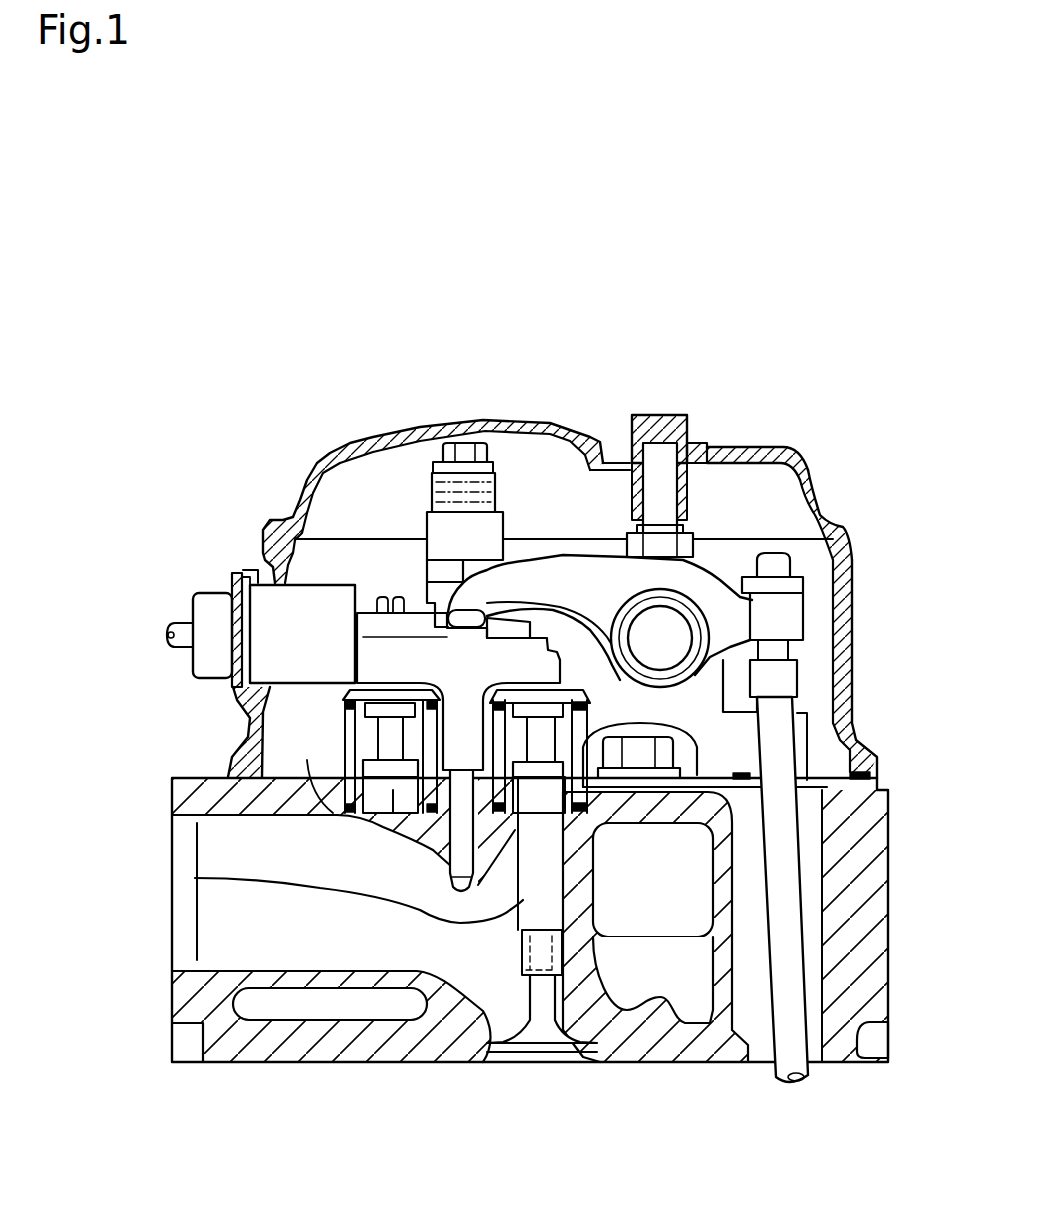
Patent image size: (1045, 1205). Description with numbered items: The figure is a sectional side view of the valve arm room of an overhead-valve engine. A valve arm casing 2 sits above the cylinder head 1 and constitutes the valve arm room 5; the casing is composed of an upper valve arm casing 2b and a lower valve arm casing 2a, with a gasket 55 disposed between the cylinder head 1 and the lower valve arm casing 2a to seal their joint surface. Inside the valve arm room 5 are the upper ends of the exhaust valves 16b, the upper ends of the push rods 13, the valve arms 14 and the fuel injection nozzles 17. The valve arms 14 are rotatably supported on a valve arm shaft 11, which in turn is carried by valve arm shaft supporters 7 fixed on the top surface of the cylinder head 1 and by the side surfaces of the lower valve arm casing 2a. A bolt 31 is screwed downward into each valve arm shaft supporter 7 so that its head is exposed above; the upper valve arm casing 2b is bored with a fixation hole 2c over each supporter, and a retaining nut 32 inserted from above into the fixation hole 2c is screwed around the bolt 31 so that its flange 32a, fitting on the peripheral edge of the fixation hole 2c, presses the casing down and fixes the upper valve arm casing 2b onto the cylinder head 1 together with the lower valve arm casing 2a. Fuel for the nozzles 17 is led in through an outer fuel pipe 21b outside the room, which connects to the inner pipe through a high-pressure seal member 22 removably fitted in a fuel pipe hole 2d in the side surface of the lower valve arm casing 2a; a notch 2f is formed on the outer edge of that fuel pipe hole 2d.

The cylinder head 1 is at (877, 963).
The valve arm casing 2 is at (862, 603).
The lower valve arm casing 2a is at (847, 667).
The upper valve arm casing 2b is at (805, 470).
The fixation hole 2c is at (723, 450).
The fuel pipe hole 2d is at (230, 615).
The notch 2f is at (246, 570).
The valve arm room 5 is at (340, 517).
The valve arm shaft supporter 7 is at (693, 553).
The valve arm shaft 11 is at (670, 647).
The push rod 13 is at (783, 862).
The valve arm 14 is at (562, 572).
The exhaust valve 16b is at (393, 790).
The fuel injection nozzle 17 is at (427, 485).
The outer fuel pipe 21b is at (180, 638).
The high-pressure seal member 22 is at (257, 570).
The bolt 31 is at (660, 498).
The retaining nut 32 is at (657, 417).
The flange 32a is at (696, 443).
The gasket 55 is at (743, 777).